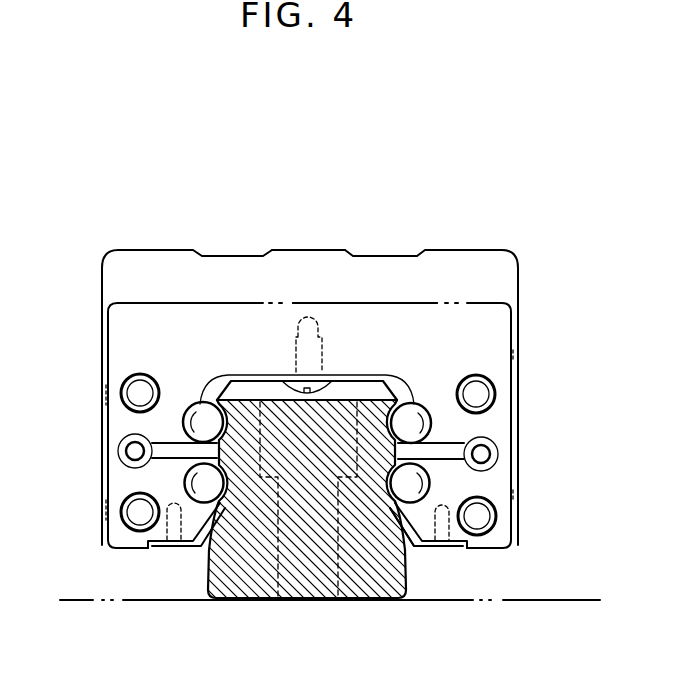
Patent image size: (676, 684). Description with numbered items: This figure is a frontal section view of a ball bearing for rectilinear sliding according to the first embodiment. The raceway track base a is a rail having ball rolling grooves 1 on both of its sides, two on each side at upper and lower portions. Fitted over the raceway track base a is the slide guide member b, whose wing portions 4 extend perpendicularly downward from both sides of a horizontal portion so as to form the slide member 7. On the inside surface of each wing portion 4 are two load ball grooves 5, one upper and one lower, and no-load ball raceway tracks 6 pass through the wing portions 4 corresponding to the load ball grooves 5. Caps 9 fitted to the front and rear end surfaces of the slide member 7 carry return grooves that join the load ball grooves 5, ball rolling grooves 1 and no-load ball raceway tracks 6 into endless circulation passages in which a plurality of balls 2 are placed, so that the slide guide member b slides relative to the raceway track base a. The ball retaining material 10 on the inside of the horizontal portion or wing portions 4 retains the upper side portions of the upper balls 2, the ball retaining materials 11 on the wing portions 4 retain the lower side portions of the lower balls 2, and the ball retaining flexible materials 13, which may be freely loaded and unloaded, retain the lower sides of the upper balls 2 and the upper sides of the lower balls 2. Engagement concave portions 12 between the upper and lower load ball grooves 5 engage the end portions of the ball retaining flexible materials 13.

The ball rolling grooves 1 is at (206, 392).
The balls 2 is at (190, 408).
The wing portions 4 is at (512, 420).
The load ball grooves 5 is at (428, 543).
The no-load ball raceway tracks 6 is at (122, 518).
The slide member 7 is at (513, 239).
The caps 9 is at (418, 303).
The ball retaining material 10 is at (258, 376).
The ball retaining materials 11 is at (407, 527).
The engagement concave portions 12 is at (157, 443).
The ball retaining flexible materials 13 is at (125, 469).
The raceway track base a is at (224, 602).
The slide guide member b is at (335, 234).